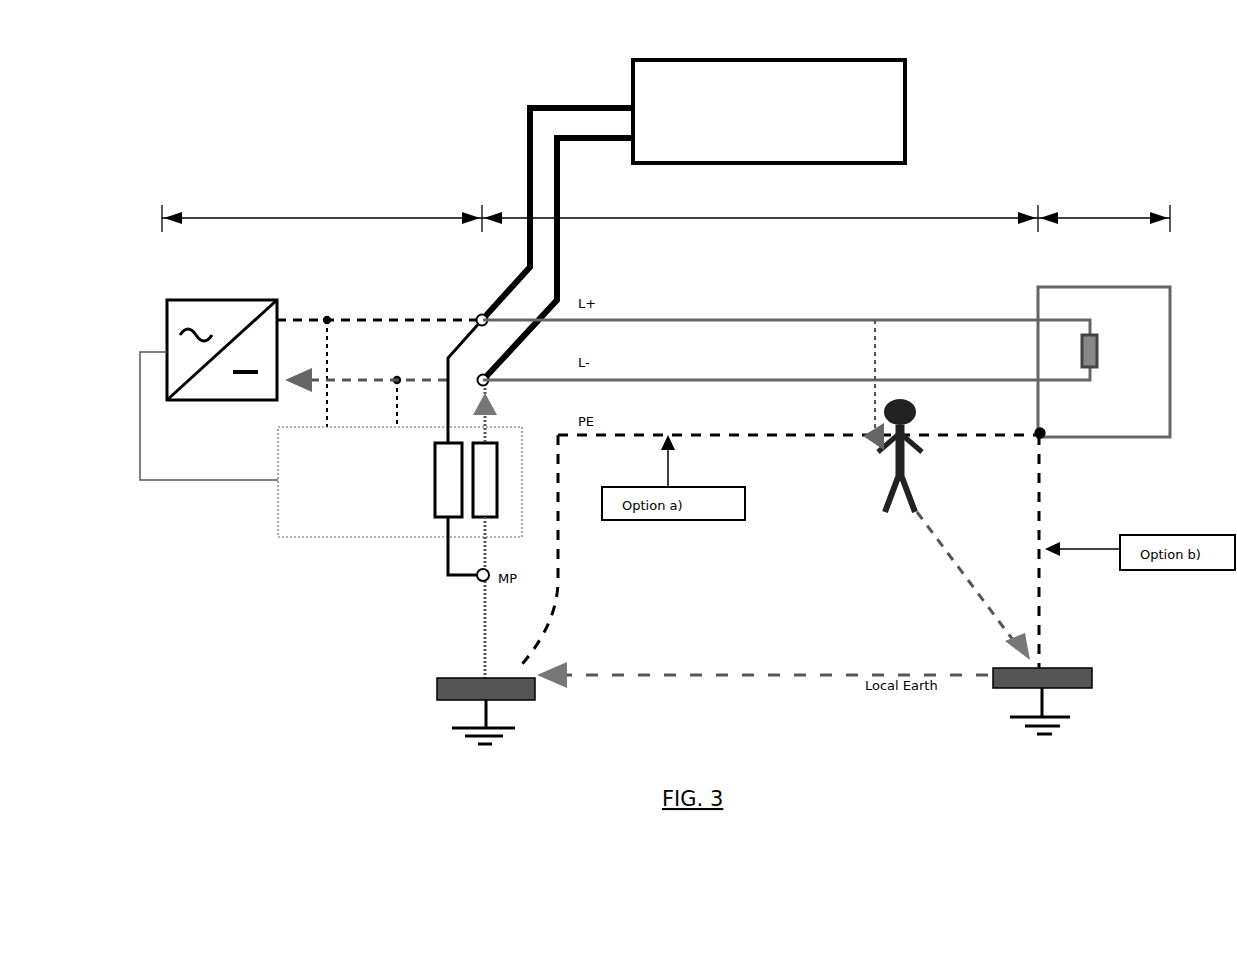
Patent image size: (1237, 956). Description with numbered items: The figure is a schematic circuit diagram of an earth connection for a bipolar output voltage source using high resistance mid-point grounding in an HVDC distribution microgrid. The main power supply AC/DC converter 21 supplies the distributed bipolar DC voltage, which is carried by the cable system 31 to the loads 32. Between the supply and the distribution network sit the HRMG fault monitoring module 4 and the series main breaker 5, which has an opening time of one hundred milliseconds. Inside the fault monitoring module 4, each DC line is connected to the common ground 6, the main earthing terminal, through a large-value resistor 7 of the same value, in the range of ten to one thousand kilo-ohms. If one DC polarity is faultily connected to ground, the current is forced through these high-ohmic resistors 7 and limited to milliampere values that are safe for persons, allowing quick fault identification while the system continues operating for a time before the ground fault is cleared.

The HRMG fault monitoring module 4 is at (288, 545).
The main breaker 5 is at (769, 111).
The common ground (MET) 6 is at (523, 675).
The resistor 7 is at (424, 521).
The main power supply AC/DC converter 21 is at (334, 169).
The cable system 31 is at (933, 197).
The loads 32 is at (1126, 203).